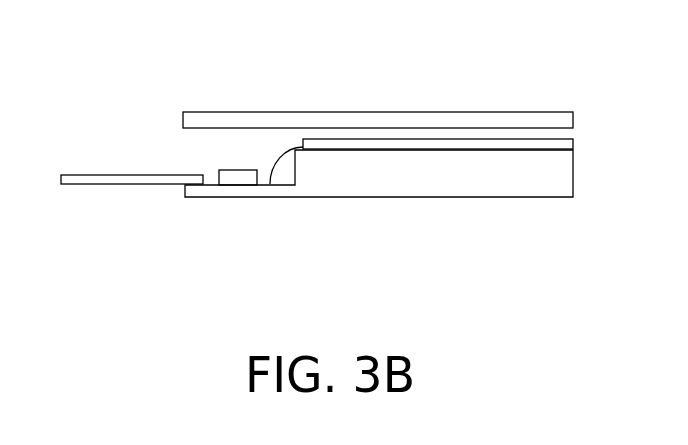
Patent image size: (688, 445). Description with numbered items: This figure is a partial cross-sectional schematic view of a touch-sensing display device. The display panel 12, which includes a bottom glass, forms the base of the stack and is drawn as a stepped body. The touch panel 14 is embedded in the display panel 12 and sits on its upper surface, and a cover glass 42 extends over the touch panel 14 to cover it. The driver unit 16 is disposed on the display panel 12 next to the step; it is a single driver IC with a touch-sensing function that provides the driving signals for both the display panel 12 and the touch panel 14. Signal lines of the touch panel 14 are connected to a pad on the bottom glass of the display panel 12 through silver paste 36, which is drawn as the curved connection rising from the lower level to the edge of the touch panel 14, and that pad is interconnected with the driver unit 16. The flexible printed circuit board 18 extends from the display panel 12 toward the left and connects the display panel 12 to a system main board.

The display panel 12 is at (442, 183).
The touch panel 14 is at (457, 145).
The driver unit 16 is at (237, 175).
The flexible printed circuit board 18 is at (83, 177).
The silver paste 36 is at (272, 158).
The cover glass 42 is at (353, 118).